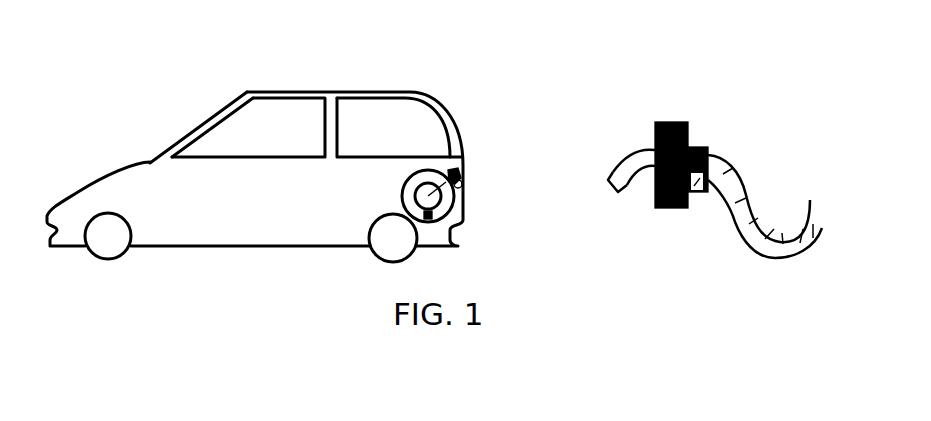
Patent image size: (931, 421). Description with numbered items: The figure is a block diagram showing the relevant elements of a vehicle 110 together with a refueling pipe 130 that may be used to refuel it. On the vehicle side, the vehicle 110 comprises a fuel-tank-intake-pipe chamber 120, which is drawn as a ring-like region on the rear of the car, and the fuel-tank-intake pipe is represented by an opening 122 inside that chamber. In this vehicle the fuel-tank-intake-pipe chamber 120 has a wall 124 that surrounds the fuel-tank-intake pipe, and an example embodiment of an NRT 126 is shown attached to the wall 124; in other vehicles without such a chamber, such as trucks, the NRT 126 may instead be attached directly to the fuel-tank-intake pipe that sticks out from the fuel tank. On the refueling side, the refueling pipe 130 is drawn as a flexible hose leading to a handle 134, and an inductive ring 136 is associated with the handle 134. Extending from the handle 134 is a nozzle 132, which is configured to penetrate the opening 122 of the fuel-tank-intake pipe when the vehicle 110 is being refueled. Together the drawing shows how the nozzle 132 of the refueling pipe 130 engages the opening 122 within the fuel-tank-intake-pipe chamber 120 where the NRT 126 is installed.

The vehicle 110 is at (224, 99).
The fuel-tank-intake-pipe chamber 120 is at (400, 195).
The opening 122 is at (460, 168).
The wall 124 is at (463, 186).
The NRT 126 is at (432, 218).
The refueling pipe 130 is at (753, 210).
The nozzle 132 is at (612, 175).
The handle 134 is at (690, 134).
The inductive ring 136 is at (655, 123).